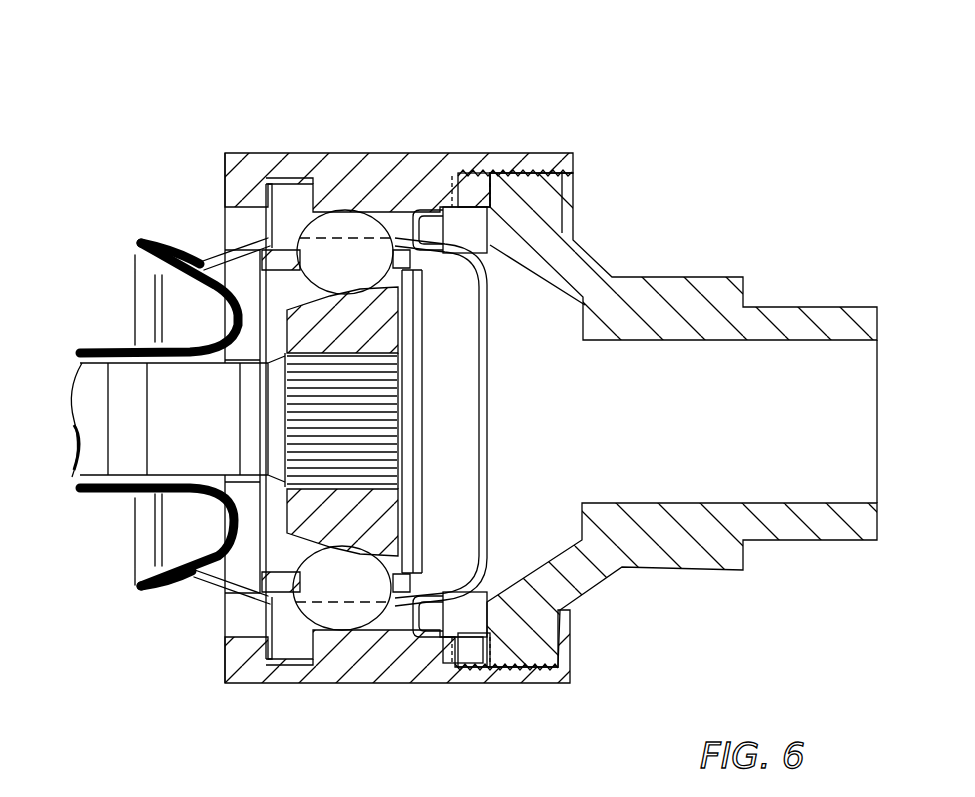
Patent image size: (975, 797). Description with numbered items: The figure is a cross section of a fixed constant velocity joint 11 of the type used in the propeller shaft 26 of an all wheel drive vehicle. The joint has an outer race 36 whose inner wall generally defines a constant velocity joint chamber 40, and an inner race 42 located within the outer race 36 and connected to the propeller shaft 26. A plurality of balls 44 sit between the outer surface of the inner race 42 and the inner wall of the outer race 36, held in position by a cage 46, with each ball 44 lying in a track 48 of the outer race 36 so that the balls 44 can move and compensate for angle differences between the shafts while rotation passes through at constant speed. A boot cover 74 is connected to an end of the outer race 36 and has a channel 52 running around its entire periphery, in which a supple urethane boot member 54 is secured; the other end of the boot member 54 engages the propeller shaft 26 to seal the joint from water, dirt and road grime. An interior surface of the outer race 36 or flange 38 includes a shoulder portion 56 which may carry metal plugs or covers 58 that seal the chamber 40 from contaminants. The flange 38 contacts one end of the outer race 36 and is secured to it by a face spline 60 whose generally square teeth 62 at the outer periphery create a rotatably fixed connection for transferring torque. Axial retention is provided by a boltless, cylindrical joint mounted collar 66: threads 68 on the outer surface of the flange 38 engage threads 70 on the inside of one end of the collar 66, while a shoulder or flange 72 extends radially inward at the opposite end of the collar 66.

The constant velocity joint 11 is at (672, 173).
The propeller shaft 26 is at (72, 455).
The outer race 36 is at (336, 165).
The flange 38 is at (673, 279).
The constant velocity joint chamber 40 is at (463, 437).
The inner race 42 is at (360, 328).
The balls 44 is at (353, 220).
The cage 46 is at (465, 558).
The track 48 is at (252, 238).
The channel 52 is at (137, 600).
The boot member 54 is at (125, 503).
The shoulder portion 56 is at (427, 637).
The plugs or covers 58 is at (490, 484).
The face spline 60 is at (460, 655).
The teeth 62 is at (474, 175).
The joint mounted collar 66 is at (258, 165).
The threads 68 is at (520, 670).
The threads 70 is at (527, 173).
The shoulder or flange 72 is at (233, 660).
The boot cover 74 is at (210, 588).